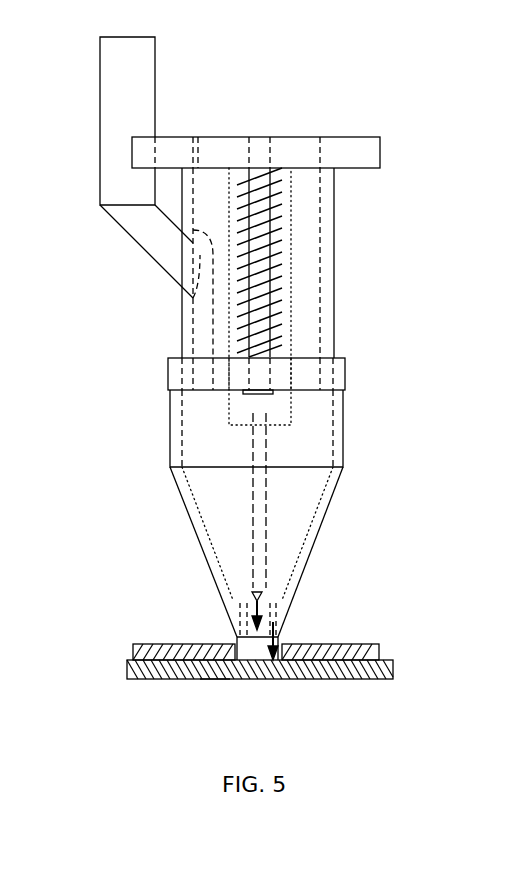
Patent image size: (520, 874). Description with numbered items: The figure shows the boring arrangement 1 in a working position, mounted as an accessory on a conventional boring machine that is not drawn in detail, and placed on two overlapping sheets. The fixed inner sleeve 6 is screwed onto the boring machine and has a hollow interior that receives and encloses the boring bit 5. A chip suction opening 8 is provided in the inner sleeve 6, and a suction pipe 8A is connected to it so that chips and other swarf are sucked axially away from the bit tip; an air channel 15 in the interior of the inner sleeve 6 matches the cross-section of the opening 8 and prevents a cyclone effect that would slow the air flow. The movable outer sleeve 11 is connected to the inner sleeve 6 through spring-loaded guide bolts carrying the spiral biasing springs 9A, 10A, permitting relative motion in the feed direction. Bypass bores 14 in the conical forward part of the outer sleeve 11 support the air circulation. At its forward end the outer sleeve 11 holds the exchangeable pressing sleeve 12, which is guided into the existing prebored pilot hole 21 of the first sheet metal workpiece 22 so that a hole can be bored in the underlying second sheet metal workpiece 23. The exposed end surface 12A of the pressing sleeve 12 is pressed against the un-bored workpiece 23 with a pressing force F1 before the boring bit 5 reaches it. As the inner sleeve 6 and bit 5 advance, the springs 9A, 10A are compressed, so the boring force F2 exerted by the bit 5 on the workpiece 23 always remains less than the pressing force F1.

The boring arrangement 1 is at (345, 62).
The boring bit 5 is at (257, 523).
The inner sleeve 6 is at (323, 223).
The chip suction opening 8 is at (193, 266).
The suction pipe 8A is at (122, 66).
The spiral biasing spring 9A is at (270, 287).
The spiral biasing spring 10A is at (349, 296).
The outer sleeve 11 is at (323, 446).
The pressing sleeve 12 is at (235, 614).
The exposed end surface 12A is at (216, 678).
The bypass bores 14 is at (215, 570).
The air channel 15 is at (205, 323).
The pilot hole 21 is at (233, 645).
The first sheet metal workpiece 22 is at (335, 645).
The second sheet metal workpiece 23 is at (350, 675).
The pressing force F1 is at (275, 663).
The boring force F2 is at (255, 663).